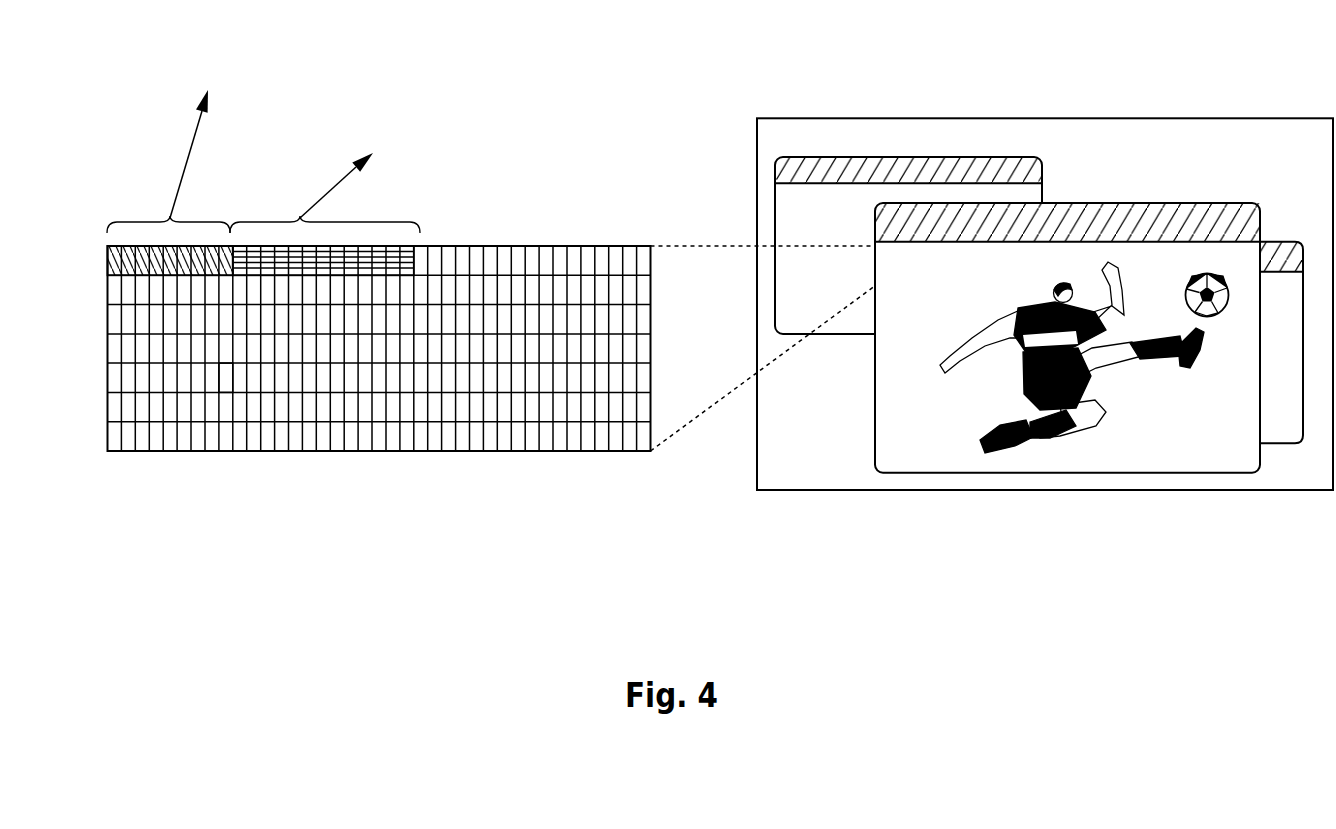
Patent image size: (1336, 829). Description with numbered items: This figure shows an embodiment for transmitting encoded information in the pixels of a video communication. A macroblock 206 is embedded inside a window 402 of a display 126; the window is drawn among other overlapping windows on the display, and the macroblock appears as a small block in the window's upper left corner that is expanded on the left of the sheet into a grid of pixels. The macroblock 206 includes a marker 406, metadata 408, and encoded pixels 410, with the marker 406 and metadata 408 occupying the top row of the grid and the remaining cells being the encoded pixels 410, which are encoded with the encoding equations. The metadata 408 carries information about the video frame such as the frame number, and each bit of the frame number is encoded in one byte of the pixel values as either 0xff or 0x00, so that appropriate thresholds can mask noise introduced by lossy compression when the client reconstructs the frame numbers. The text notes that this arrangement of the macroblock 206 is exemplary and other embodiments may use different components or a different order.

The display 126 is at (913, 128).
The window 402 is at (887, 460).
The macroblock 206 is at (588, 452).
The marker 406 is at (170, 312).
The metadata 408 is at (320, 311).
The encoded pixels 410 is at (231, 400).